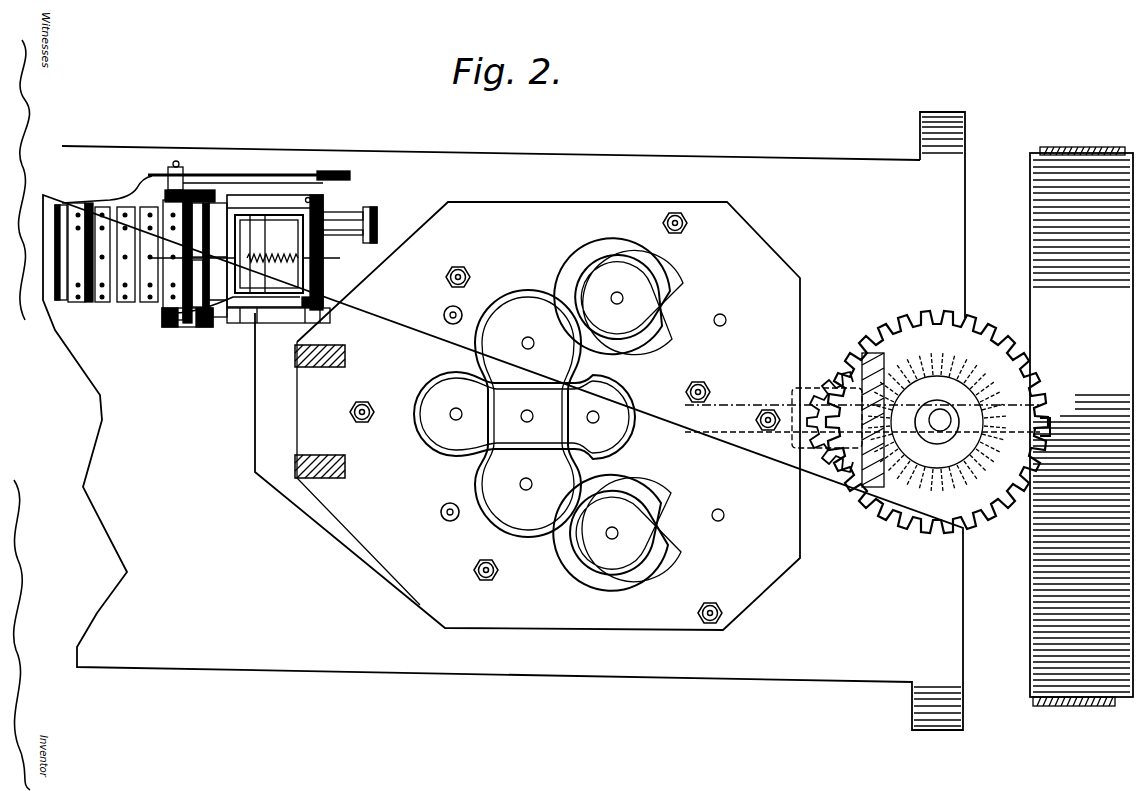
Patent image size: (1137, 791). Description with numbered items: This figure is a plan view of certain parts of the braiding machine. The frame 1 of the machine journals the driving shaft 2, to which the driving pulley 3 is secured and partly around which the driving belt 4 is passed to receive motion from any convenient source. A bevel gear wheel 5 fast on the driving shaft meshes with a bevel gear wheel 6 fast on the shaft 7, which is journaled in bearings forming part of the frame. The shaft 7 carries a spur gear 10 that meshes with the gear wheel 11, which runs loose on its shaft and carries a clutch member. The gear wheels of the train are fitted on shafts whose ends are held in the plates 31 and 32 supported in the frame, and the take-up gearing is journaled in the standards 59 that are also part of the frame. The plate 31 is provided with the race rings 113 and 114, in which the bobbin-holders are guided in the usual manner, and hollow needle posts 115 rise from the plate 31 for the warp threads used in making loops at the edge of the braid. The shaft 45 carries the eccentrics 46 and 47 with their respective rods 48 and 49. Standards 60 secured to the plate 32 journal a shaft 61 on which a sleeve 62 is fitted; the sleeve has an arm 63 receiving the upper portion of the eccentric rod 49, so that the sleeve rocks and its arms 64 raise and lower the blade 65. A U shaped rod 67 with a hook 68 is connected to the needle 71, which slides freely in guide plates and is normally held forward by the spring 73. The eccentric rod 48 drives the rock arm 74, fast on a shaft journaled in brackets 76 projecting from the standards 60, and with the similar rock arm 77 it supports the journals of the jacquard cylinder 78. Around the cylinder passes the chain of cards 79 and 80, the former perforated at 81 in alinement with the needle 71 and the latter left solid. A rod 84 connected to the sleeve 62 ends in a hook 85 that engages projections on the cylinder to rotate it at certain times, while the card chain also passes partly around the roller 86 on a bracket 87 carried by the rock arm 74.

The frame 1 is at (504, 421).
The driving shaft 2 is at (1043, 434).
The driving pulley 3 is at (1081, 425).
The driving belt 4 is at (1080, 148).
The bevel gear wheel 5 is at (880, 470).
The bevel gear wheel 6 is at (995, 400).
The shaft 7 is at (938, 432).
The spur gear 10 is at (985, 330).
The gear wheel 11 is at (815, 375).
The plate 31 is at (527, 416).
The plate 32 is at (262, 438).
The shaft 45 is at (352, 183).
The eccentric 46 is at (310, 183).
The eccentric 47 is at (352, 200).
The eccentric rod 48 is at (245, 175).
The eccentric rod 49 is at (383, 228).
The standards 59 is at (320, 411).
The standards 60 is at (263, 217).
The shaft 61 is at (310, 318).
The sleeve 62 is at (310, 282).
The arm 63 is at (345, 236).
The arms 64 is at (272, 247).
The blade 65 is at (240, 250).
The U shaped rod 67 is at (306, 198).
The hook 68 is at (240, 268).
The needle 71 is at (213, 255).
The spring 73 is at (272, 251).
The rock arm 74 is at (195, 188).
The brackets 76 is at (220, 200).
The rock arm 77 is at (192, 330).
The jacquard cylinder 78 is at (165, 196).
The perforated cards 79 is at (77, 303).
The solid cards 80 is at (78, 256).
The perforations 81 is at (110, 260).
The rod 84 is at (243, 313).
The hook 85 is at (187, 320).
The roller 86 is at (62, 203).
The bracket 87 is at (112, 199).
The race ring 113 is at (526, 300).
The race ring 114 is at (443, 380).
The hollow needle posts 115 is at (446, 308).